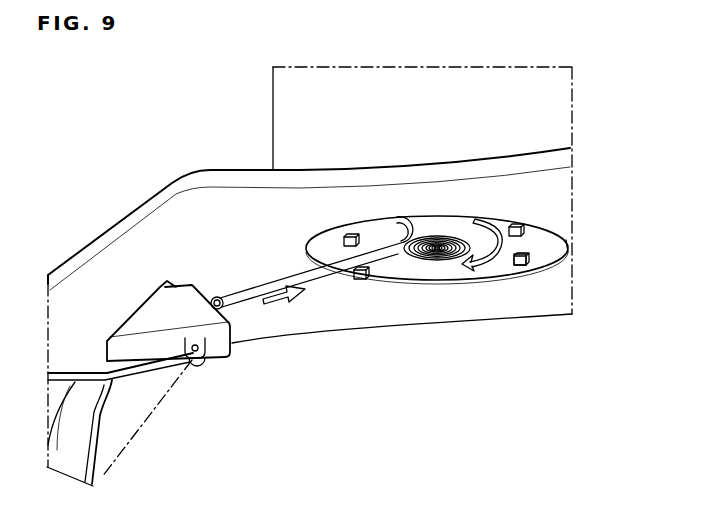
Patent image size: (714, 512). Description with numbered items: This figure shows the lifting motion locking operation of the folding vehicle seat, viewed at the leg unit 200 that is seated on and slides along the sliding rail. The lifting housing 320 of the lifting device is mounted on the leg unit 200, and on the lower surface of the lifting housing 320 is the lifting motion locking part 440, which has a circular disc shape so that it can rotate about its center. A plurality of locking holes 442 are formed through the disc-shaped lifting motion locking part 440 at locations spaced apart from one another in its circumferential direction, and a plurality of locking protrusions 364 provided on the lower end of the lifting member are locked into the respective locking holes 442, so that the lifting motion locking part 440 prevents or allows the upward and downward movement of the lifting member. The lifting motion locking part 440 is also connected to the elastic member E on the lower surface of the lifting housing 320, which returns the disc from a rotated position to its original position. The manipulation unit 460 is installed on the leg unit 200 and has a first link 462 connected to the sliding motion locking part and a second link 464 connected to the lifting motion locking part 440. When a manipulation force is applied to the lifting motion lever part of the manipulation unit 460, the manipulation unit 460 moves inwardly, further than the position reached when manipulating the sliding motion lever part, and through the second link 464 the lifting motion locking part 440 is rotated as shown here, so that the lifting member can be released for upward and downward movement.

The leg unit 200 is at (139, 182).
The lifting housing 320 is at (293, 103).
The manipulation unit 460 is at (160, 312).
The first link 462 is at (150, 366).
The second link 464 is at (385, 250).
The lifting motion locking part 440 is at (543, 235).
The locking holes 442 is at (533, 258).
The locking protrusions 364 is at (530, 263).
The elastic member E is at (449, 253).